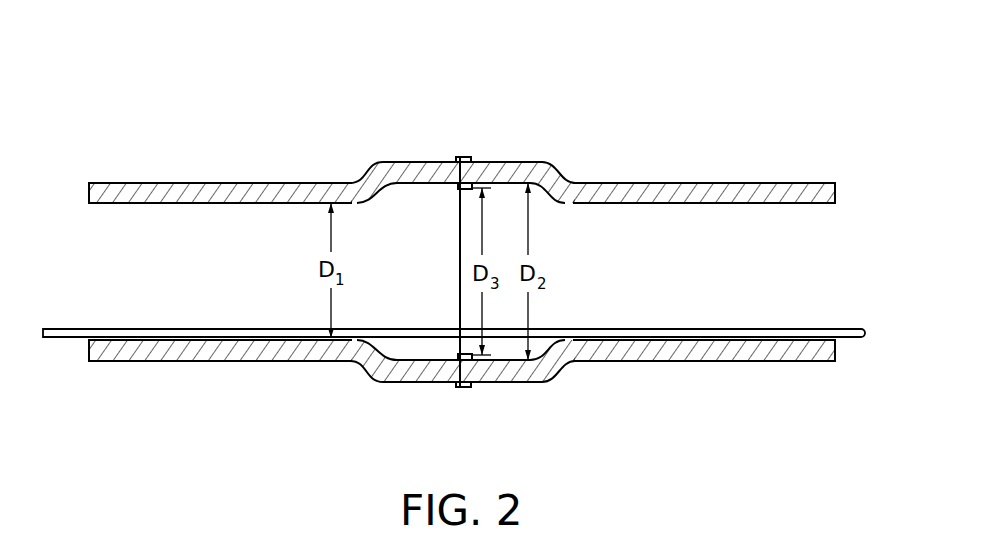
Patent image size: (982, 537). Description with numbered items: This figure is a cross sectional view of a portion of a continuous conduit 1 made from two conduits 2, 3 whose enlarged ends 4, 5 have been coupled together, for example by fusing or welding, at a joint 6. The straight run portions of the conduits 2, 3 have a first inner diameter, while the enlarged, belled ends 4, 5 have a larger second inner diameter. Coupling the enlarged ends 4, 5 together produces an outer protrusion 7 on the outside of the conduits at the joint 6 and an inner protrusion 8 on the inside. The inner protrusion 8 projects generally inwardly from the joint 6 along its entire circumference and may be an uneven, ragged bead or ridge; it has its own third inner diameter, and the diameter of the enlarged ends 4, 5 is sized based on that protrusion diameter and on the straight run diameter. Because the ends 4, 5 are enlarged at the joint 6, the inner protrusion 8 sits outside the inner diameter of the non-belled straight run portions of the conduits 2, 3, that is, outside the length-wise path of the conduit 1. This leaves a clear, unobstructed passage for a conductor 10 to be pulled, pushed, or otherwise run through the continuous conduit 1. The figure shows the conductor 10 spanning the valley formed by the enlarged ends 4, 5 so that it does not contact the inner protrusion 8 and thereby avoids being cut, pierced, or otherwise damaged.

The continuous conduit 1 is at (458, 238).
The conduit 2 is at (197, 183).
The conduit 3 is at (730, 183).
The enlarged end 4 is at (405, 162).
The enlarged end 5 is at (527, 183).
The joint 6 is at (483, 162).
The outer protrusion 7 is at (459, 157).
The inner protrusion 8 is at (459, 188).
The conductor 10 is at (857, 328).